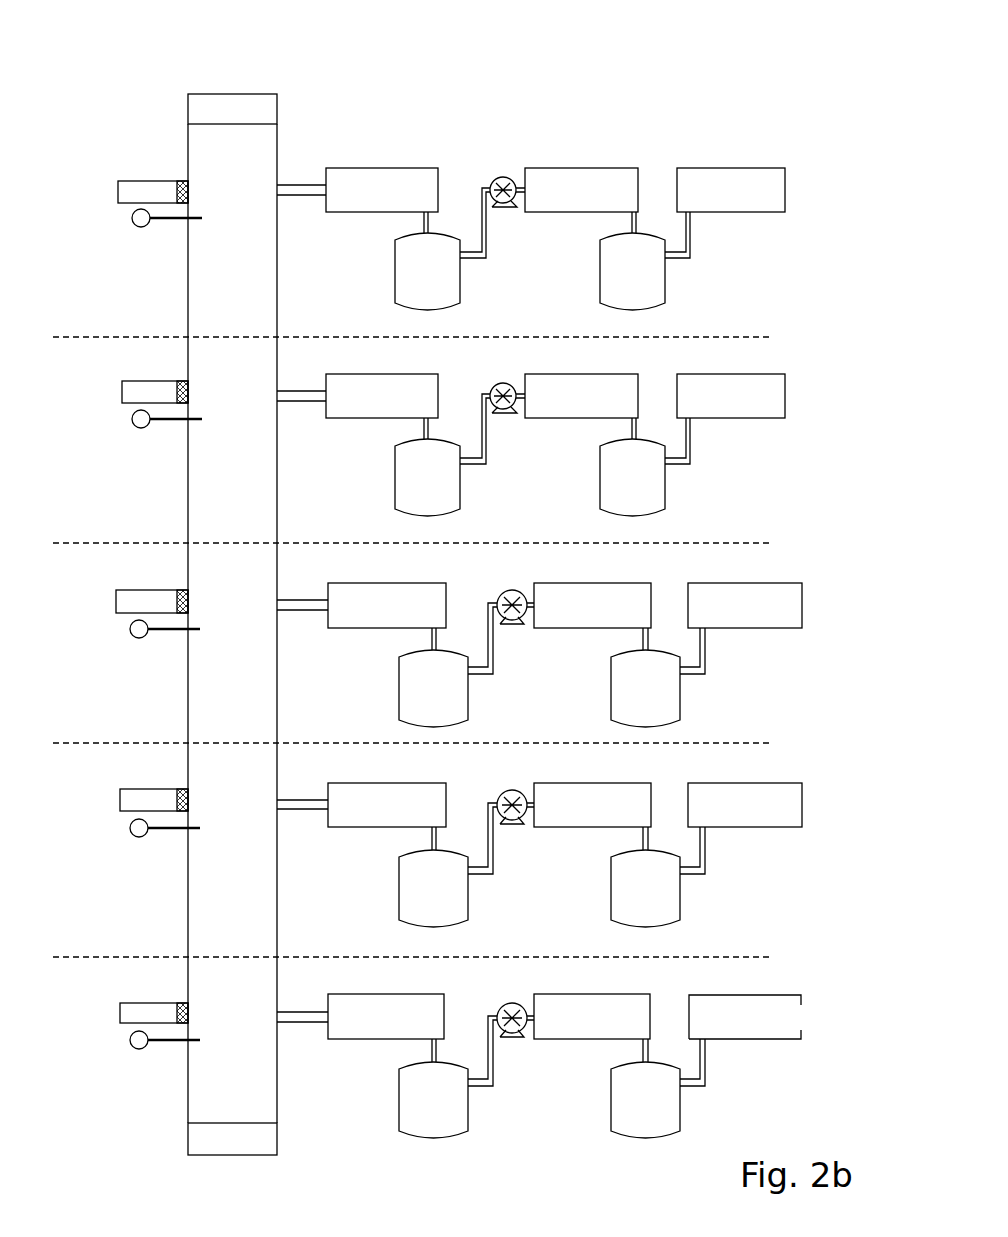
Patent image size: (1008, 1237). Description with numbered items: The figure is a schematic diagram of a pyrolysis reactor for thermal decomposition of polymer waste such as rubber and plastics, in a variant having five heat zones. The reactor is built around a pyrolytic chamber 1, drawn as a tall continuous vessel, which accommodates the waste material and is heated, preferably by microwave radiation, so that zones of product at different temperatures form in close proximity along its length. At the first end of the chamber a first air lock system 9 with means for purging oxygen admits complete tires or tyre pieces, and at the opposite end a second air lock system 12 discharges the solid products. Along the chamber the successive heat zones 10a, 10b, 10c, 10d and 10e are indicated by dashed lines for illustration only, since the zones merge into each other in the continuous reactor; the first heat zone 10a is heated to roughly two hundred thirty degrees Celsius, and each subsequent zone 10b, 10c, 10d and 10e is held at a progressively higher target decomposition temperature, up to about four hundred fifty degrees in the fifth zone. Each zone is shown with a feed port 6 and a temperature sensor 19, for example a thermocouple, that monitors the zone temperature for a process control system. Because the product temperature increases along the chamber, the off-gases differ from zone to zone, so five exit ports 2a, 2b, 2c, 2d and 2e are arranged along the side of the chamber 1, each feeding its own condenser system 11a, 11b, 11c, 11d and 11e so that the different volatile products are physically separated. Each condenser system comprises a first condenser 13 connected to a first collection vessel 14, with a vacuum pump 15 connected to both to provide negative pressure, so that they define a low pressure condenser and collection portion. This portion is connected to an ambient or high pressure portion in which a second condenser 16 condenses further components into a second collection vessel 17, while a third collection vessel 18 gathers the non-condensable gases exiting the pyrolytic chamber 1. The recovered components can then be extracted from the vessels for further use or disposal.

The pyrolytic chamber 1 is at (190, 462).
The first air lock system 9 is at (246, 106).
The second air lock system 12 is at (213, 1133).
The feed port 6 is at (128, 183).
The temperature sensor 19 is at (137, 221).
The first heat zone 10a is at (203, 280).
The second heat zone 10b is at (205, 502).
The third heat zone 10c is at (205, 692).
The fourth heat zone 10d is at (205, 903).
The fifth heat zone 10e is at (202, 1081).
The first exit port 2a is at (293, 187).
The second exit port 2b is at (295, 393).
The third exit port 2c is at (303, 605).
The fourth exit port 2d is at (303, 806).
The fifth exit port 2e is at (303, 1017).
The first condenser 13 is at (342, 203).
The first collection vessel 14 is at (403, 255).
The vacuum pump 15 is at (500, 183).
The second condenser 16 is at (568, 203).
The second collection vessel 17 is at (658, 277).
The third collection vessel 18 is at (717, 205).
The first condenser system 11a is at (587, 215).
The second condenser system 11b is at (581, 445).
The third condenser system 11c is at (580, 655).
The fourth condenser system 11d is at (580, 855).
The fifth condenser system 11e is at (580, 1066).